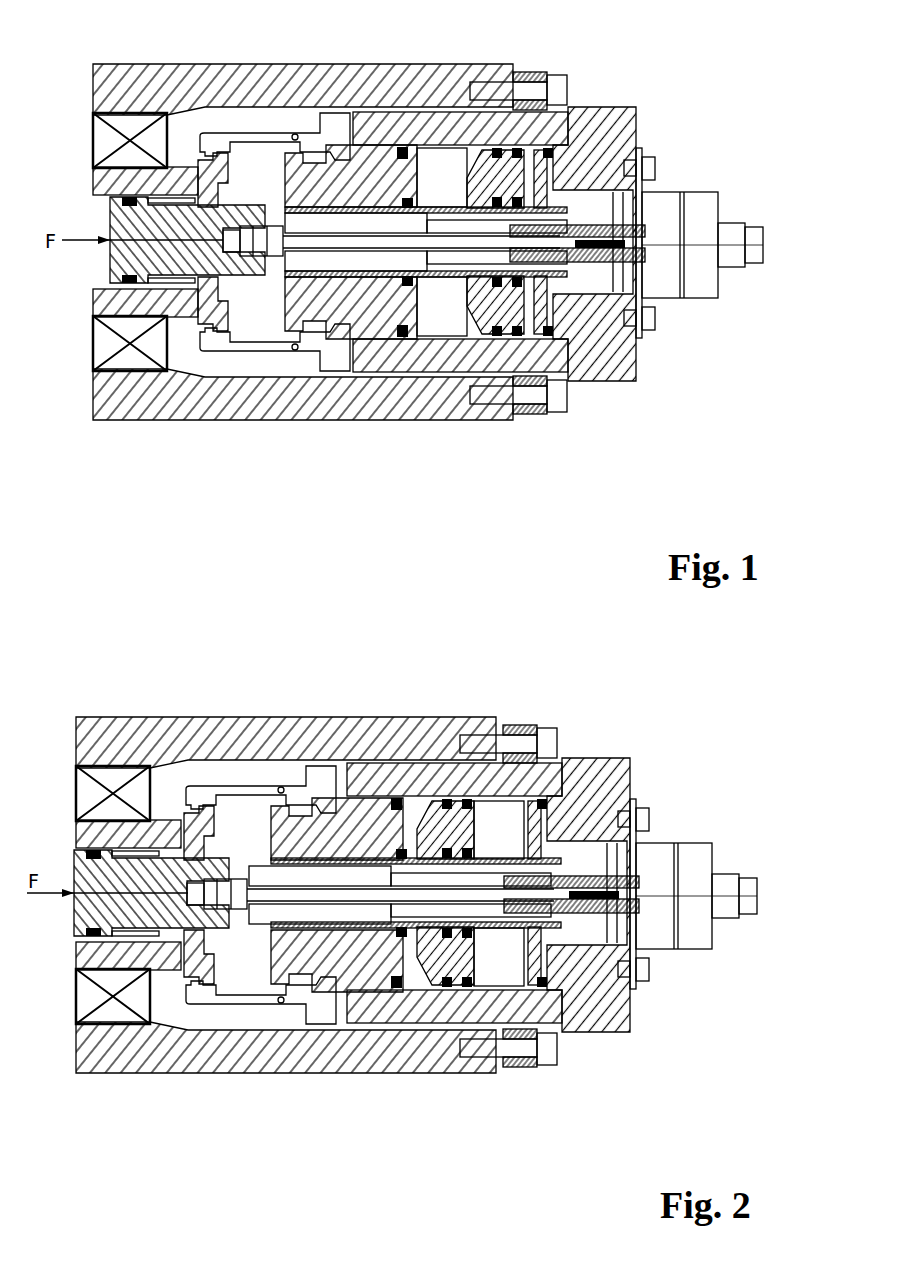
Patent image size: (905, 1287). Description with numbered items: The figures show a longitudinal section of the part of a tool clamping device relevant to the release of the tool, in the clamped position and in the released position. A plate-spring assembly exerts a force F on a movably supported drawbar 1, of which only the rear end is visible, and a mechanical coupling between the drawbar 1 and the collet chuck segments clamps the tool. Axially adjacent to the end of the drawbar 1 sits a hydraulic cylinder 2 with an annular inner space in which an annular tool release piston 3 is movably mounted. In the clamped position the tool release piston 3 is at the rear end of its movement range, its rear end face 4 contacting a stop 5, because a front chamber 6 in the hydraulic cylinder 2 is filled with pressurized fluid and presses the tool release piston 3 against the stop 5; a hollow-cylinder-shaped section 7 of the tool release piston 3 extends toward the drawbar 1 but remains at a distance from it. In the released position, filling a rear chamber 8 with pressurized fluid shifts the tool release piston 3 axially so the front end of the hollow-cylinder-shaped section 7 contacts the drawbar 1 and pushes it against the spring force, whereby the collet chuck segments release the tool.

In FIG. 1, the drawbar 1 is at (110, 262).
In FIG. 2, the drawbar 1 is at (85, 917).
In FIG. 1, the hydraulic cylinder 2 is at (603, 357).
In FIG. 2, the hydraulic cylinder 2 is at (587, 1020).
In FIG. 1, the tool release piston 3 is at (462, 300).
In FIG. 2, the tool release piston 3 is at (430, 975).
In FIG. 1, the rear end face 4 is at (474, 302).
In FIG. 1, the stop 5 is at (515, 385).
In FIG. 1, the front chamber 6 is at (435, 308).
In FIG. 1, the hollow-cylinder-shaped section 7 is at (265, 283).
In FIG. 2, the hollow-cylinder-shaped section 7 is at (253, 933).
In FIG. 2, the rear chamber 8 is at (490, 975).